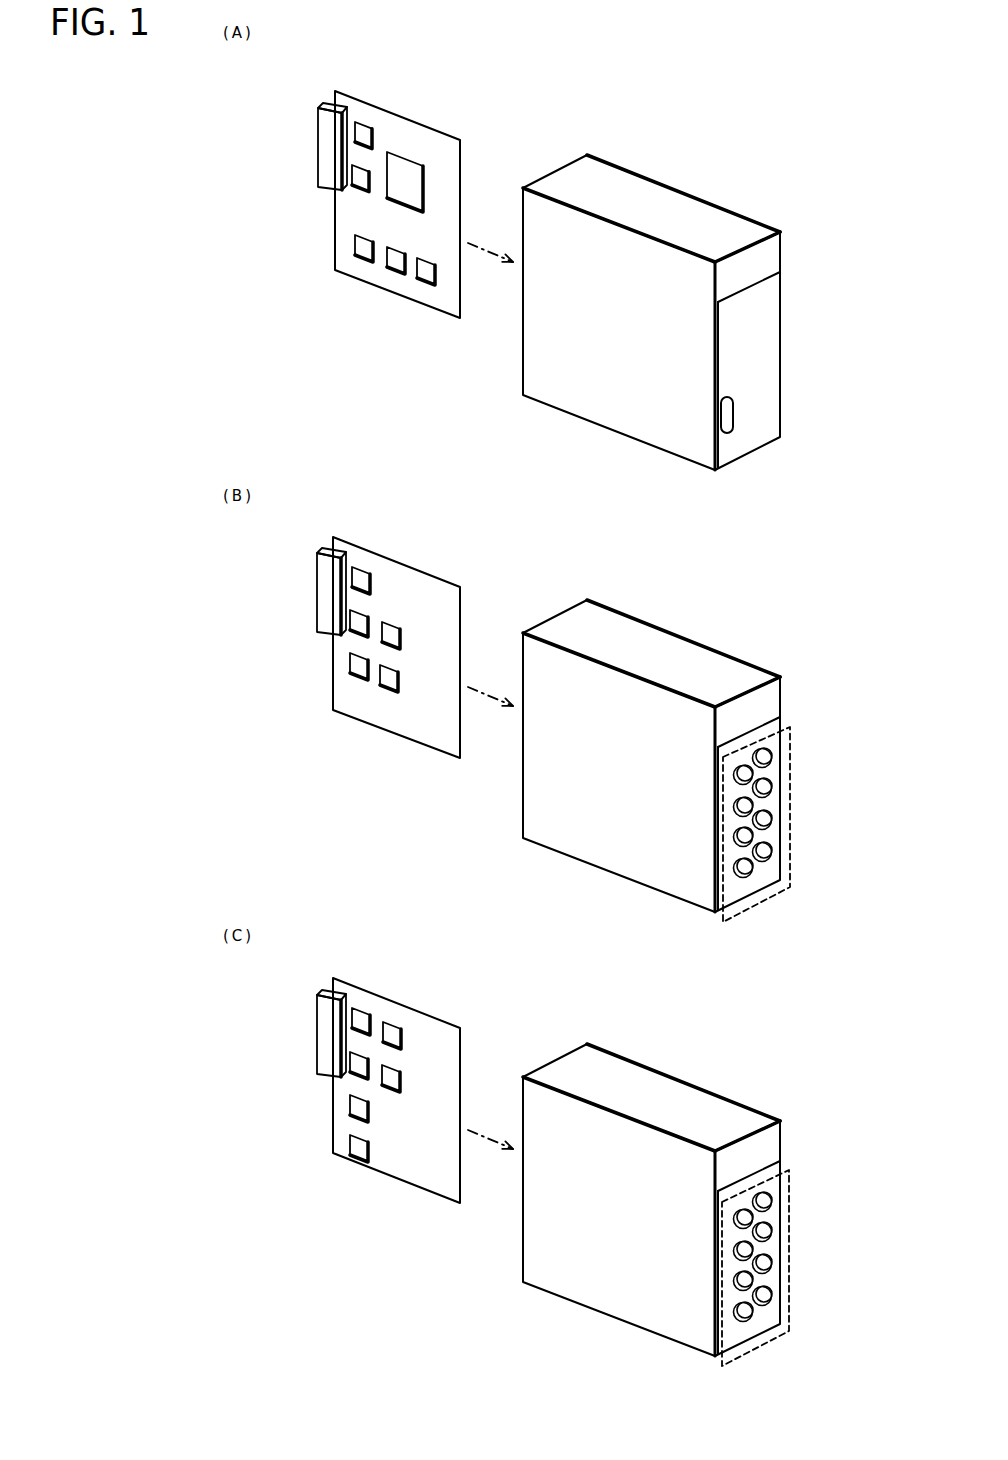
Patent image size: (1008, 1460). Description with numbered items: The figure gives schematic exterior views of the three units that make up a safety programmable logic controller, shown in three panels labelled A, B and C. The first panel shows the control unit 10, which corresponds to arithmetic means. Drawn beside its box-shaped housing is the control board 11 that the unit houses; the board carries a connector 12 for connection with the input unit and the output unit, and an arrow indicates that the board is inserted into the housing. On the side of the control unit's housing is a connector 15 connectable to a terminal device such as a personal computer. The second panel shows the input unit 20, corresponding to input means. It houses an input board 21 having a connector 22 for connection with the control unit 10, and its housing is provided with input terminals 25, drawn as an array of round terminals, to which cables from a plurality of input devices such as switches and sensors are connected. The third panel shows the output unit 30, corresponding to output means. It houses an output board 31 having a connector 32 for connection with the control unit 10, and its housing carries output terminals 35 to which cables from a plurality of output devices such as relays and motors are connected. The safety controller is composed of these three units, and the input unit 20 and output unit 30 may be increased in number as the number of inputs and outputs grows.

The control unit 10 is at (748, 168).
The control board 11 is at (398, 111).
The connector 12 is at (313, 191).
The connector 15 is at (734, 413).
The input unit 20 is at (748, 613).
The input board 21 is at (398, 557).
The connector 22 is at (313, 636).
The input terminals 25 is at (787, 808).
The output unit 30 is at (748, 1072).
The output board 31 is at (398, 998).
The connector 32 is at (313, 1078).
The output terminals 35 is at (785, 1250).